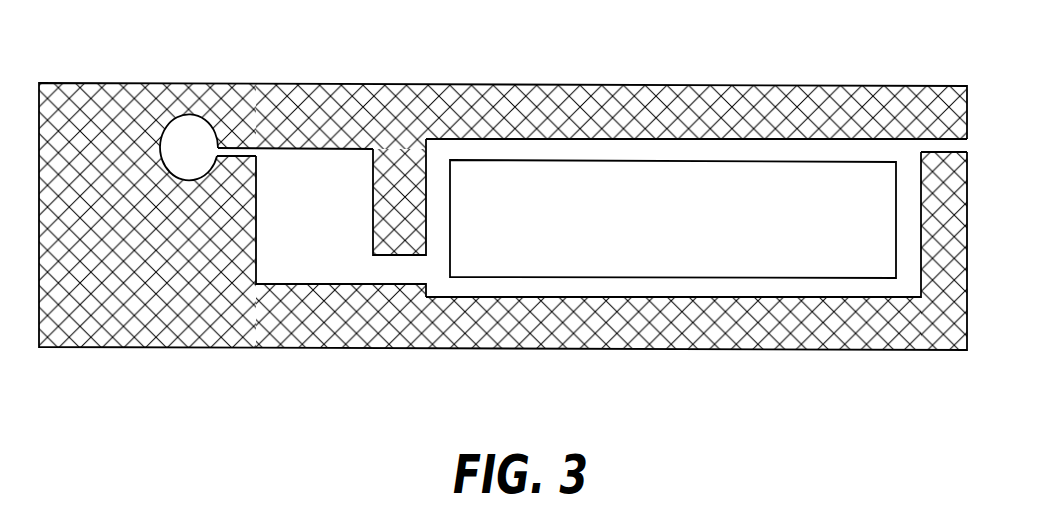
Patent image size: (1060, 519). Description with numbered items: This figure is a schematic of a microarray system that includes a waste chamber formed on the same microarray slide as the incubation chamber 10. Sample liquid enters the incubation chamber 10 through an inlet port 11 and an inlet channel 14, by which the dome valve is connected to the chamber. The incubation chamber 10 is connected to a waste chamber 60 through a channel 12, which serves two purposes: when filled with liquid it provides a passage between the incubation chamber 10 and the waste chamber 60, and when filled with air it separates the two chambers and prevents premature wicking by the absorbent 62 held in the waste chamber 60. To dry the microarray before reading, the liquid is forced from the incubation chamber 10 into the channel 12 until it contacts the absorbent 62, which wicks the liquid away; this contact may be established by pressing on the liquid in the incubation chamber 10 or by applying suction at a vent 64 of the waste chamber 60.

The incubation chamber 10 is at (348, 166).
The inlet port 11 is at (178, 132).
The channel 12 is at (395, 273).
The inlet channel 14 is at (236, 148).
The waste chamber 60 is at (738, 148).
The absorbent 62 is at (747, 243).
The vent 64 is at (948, 147).